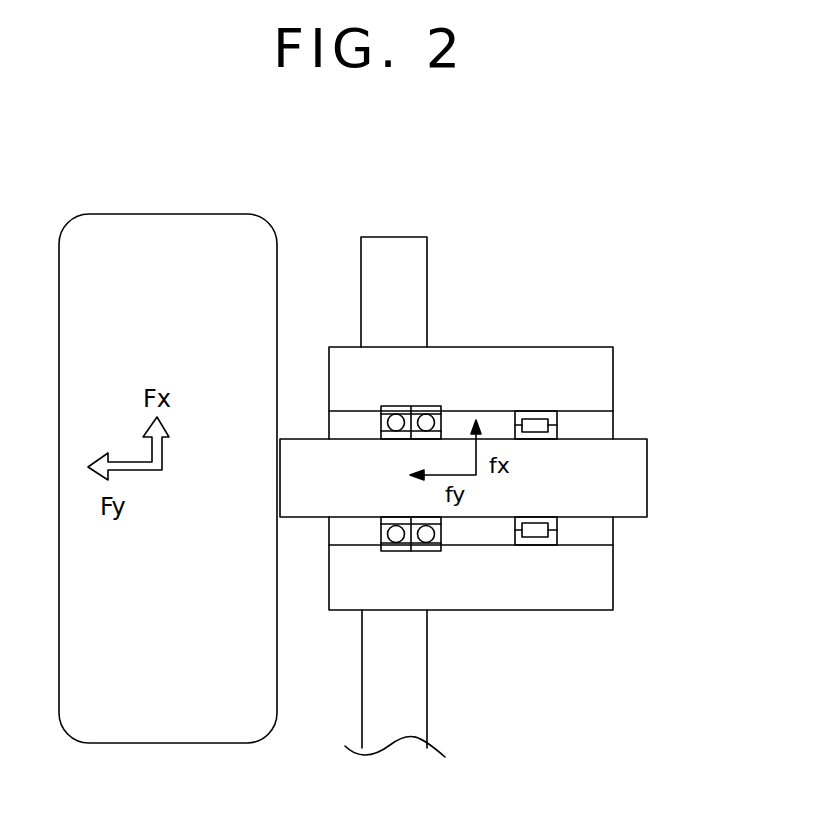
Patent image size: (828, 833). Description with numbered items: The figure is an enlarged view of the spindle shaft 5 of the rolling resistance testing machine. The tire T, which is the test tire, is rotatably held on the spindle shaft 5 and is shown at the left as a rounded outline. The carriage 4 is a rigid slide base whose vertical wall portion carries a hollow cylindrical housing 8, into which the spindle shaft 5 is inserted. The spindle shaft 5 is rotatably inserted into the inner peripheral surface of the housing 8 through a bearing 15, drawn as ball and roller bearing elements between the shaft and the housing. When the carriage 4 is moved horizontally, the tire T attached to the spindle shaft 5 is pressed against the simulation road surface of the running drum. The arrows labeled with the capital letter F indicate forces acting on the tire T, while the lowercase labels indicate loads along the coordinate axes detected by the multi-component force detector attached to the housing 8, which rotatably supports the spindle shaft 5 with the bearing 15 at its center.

The tire T is at (155, 226).
The carriage 4 is at (416, 255).
The spindle shaft 5 is at (636, 482).
The housing 8 is at (568, 375).
The bearing 15 is at (425, 405).